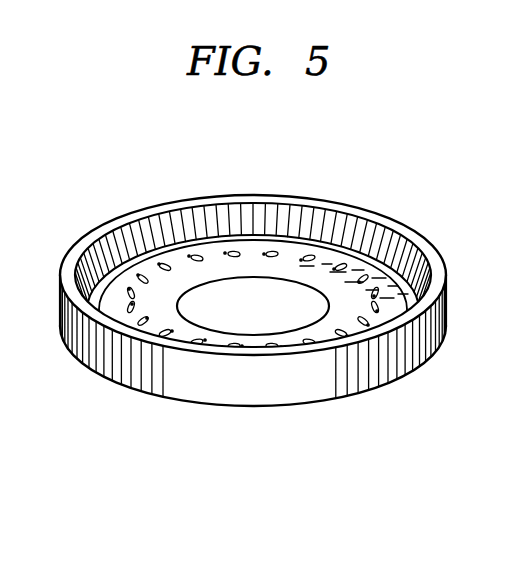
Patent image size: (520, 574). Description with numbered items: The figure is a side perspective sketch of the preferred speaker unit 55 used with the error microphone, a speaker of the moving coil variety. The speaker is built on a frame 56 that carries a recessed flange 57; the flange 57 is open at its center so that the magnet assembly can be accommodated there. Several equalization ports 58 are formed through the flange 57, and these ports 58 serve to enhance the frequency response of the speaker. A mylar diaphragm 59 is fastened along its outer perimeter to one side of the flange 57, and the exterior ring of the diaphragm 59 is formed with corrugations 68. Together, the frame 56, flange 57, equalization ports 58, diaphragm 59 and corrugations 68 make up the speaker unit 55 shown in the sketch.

The tray 55 is at (323, 406).
The frame 56 is at (214, 385).
The recessed flange 57 is at (420, 280).
The equalization ports 58 is at (251, 238).
The mylar diaphragm 59 is at (134, 266).
The corrugations 68 is at (254, 252).